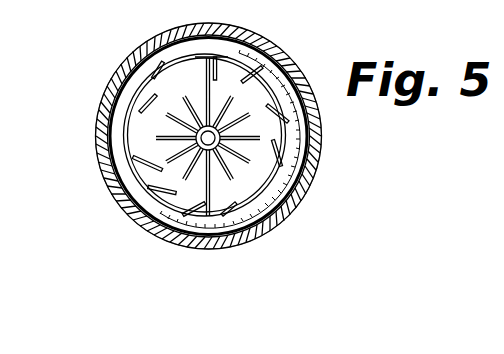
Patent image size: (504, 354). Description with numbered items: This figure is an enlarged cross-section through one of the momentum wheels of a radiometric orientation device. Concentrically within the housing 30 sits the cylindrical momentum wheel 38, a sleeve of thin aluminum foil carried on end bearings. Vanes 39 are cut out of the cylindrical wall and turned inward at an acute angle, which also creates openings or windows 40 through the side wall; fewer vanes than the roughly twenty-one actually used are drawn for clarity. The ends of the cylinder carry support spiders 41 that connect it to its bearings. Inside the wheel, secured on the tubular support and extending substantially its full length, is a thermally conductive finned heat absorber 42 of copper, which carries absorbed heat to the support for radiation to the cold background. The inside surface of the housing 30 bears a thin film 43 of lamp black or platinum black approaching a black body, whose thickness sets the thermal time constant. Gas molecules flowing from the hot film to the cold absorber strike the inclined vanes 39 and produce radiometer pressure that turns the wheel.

The housing 30 is at (317, 172).
The momentum wheel 38 is at (218, 222).
The vanes 39 is at (258, 73).
The openings or windows 40 is at (288, 150).
The support spiders 41 is at (291, 208).
The finned heat absorber 42 is at (200, 215).
The thin film 43 is at (253, 226).